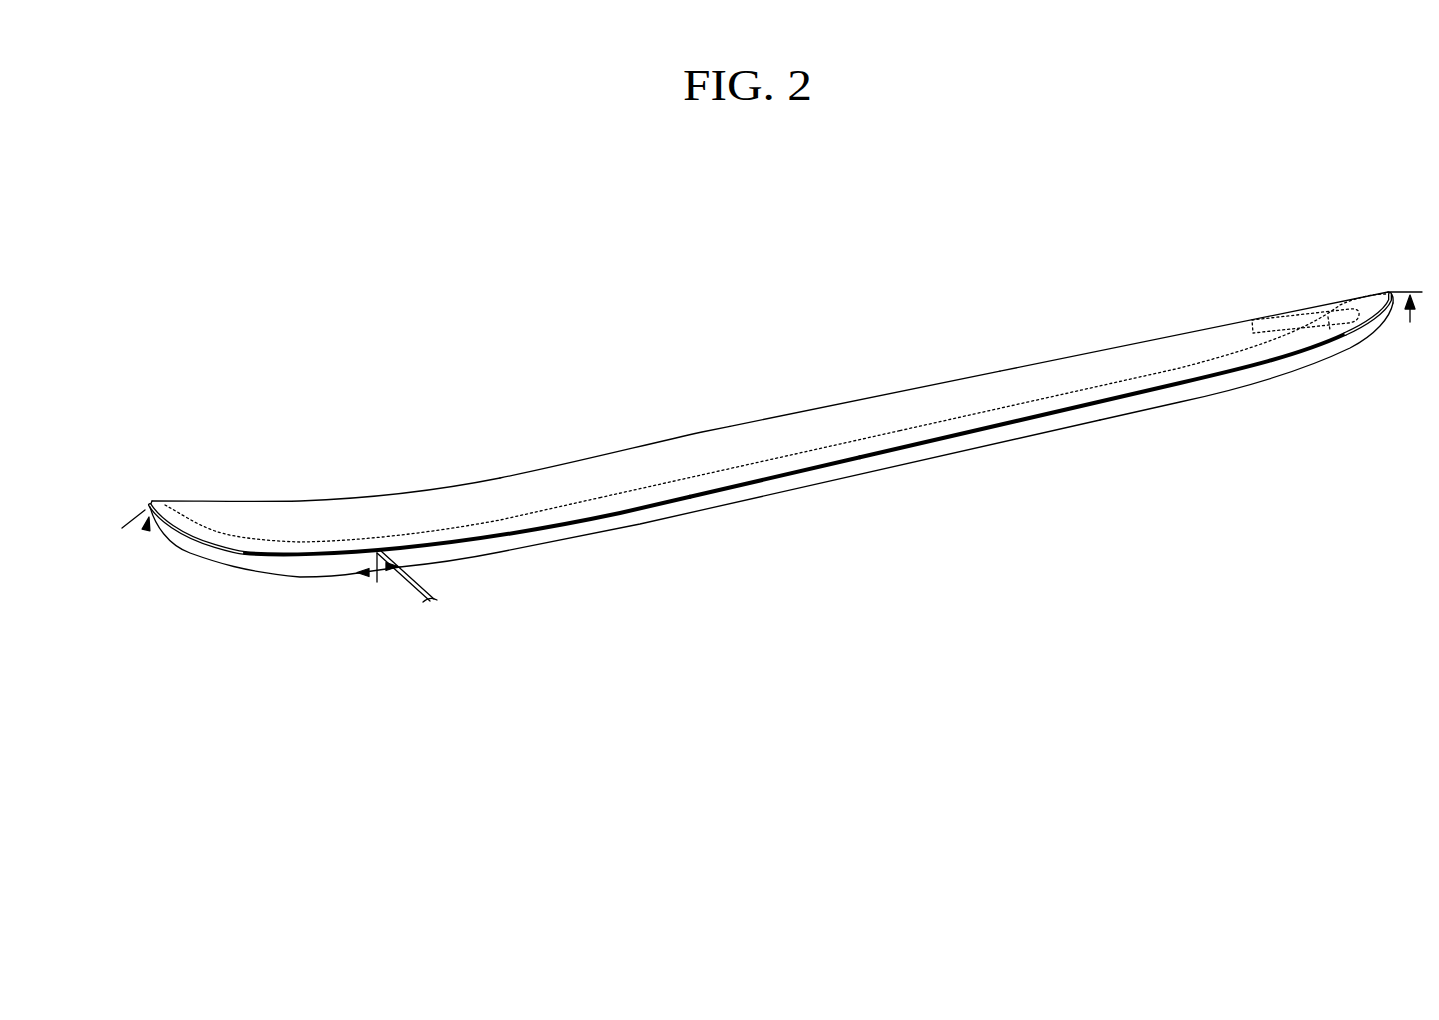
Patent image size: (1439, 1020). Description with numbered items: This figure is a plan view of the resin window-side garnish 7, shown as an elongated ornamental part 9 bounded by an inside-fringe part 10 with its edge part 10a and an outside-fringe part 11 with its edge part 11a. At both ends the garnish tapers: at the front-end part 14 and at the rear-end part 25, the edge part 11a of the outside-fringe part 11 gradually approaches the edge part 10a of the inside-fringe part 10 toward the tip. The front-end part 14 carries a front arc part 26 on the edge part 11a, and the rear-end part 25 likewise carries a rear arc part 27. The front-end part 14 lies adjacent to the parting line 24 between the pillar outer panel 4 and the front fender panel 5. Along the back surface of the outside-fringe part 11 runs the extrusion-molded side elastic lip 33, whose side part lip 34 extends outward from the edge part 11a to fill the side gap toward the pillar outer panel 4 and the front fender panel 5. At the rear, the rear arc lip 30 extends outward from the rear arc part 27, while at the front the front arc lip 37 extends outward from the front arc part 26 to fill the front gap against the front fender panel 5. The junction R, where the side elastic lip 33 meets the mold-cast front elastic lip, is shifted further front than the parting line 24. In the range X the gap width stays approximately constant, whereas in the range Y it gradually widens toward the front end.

The pillar outer panel 4 is at (433, 590).
The front fender panel 5 is at (402, 585).
The window-side garnish 7 is at (706, 421).
The ornamental part 9 is at (653, 458).
The inside-fringe part 10 is at (763, 437).
The edge part of the inside-fringe part 10a is at (843, 402).
The outside-fringe part 11 is at (912, 440).
The edge part of the outside-fringe part 11a is at (813, 474).
The front-end part 14 is at (212, 510).
The parting line 24 is at (435, 600).
The rear-end part 25 is at (1366, 304).
The front arc part 26 is at (181, 532).
The rear arc part 27 is at (1362, 330).
The rear arc lip 30 is at (1410, 322).
The side elastic lip 33 is at (750, 478).
The side part lip 34 is at (677, 503).
The front arc lip 37 is at (146, 530).
The range X is at (1042, 436).
The range Y is at (279, 574).
The junction R is at (249, 538).